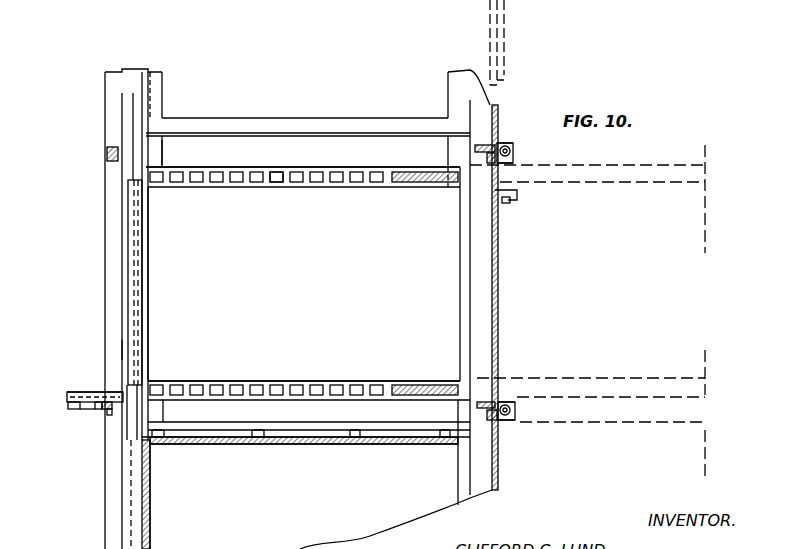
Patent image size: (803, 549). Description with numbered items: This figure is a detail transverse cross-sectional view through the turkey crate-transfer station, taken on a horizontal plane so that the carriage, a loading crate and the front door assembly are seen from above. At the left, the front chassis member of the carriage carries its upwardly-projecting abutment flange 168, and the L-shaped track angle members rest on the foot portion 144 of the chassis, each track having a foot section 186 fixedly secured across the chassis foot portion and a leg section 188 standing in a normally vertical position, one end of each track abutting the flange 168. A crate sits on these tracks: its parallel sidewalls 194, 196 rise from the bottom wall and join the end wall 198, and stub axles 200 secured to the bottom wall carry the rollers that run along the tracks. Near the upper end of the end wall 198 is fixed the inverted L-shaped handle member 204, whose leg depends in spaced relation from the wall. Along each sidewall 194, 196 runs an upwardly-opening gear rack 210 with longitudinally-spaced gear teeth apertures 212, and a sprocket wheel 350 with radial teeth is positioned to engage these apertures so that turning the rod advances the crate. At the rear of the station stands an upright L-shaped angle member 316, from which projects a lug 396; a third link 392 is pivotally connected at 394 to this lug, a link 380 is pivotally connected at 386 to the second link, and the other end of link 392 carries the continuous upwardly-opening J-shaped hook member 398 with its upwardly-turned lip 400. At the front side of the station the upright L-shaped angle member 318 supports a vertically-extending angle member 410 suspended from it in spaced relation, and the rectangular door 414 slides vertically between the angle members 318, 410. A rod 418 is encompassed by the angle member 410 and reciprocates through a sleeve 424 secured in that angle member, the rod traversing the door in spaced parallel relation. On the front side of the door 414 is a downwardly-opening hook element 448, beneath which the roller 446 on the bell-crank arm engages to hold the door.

The abutment flange 168 is at (143, 69).
The foot section 186 is at (272, 118).
The leg section 188 is at (232, 457).
The foot portion 144 is at (163, 158).
The upright L-shaped angle member 316 is at (106, 156).
The sidewall 196 is at (307, 186).
The sprocket wheel 350 is at (388, 183).
The gear rack 210 is at (333, 168).
The gear teeth aperture 212 is at (270, 183).
The sidewall 194 is at (340, 384).
The inverted L-shaped handle member 204 is at (118, 294).
The end wall 198 is at (150, 298).
The J-shaped hook member 398 is at (125, 347).
The third link 392 is at (88, 392).
The link 380 is at (68, 403).
The pivotal connection 386 is at (75, 406).
The lug 396 is at (94, 406).
The pivotal connection 394 is at (100, 413).
The upwardly-turned lip 400 is at (137, 418).
The upright L-shaped angle member 318 is at (105, 411).
The stub axle 200 is at (268, 444).
The vertically-extending angle member 410 is at (513, 158).
The sleeve 424 is at (510, 147).
The rod 418 is at (505, 165).
The hook element 448 is at (518, 193).
The roller 446 is at (516, 203).
The door 414 is at (499, 322).